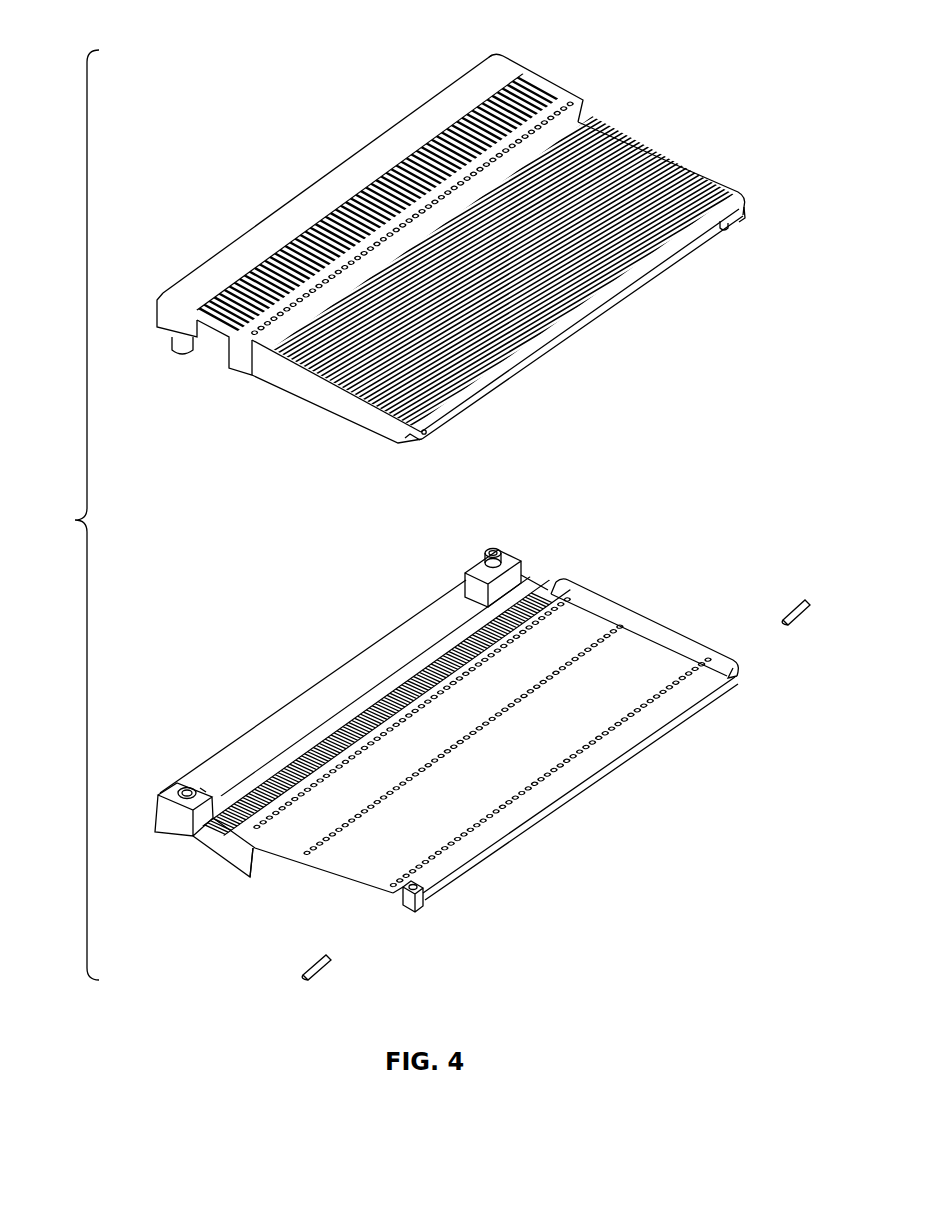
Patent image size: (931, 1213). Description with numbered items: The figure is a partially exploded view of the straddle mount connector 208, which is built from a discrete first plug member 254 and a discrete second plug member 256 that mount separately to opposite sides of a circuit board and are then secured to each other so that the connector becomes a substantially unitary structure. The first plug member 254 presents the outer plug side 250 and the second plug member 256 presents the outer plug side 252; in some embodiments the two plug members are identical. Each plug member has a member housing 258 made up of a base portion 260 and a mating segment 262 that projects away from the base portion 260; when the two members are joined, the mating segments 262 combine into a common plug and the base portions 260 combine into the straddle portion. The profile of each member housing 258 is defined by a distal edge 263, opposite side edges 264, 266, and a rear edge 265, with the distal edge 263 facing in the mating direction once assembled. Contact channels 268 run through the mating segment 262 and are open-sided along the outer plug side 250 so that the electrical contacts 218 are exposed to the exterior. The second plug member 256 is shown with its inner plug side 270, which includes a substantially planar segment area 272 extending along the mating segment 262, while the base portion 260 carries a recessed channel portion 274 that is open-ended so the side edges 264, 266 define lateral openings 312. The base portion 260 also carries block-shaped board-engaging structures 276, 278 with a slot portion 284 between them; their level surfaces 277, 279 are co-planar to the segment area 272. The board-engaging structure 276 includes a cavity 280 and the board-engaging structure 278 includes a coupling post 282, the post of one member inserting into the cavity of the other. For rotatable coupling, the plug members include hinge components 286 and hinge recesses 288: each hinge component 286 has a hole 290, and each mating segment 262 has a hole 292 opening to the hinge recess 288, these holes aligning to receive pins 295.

The straddle mount connector 208 is at (63, 515).
The electrical contacts 218 is at (672, 215).
The outer plug side 250 is at (600, 170).
The outer plug side 252 is at (535, 845).
The first plug member 254 is at (328, 78).
The second plug member 256 is at (240, 930).
The member housing 258 is at (433, 113).
The base portion 260 is at (537, 67).
The mating segment 262 is at (664, 152).
The distal edge 263 is at (600, 320).
The side edge 264 is at (743, 196).
The rear edge 265 is at (298, 205).
The side edge 266 is at (307, 410).
The contact channels 268 is at (647, 255).
The inner plug side 270 is at (540, 368).
The segment area 272 is at (526, 769).
The channel portion 274 is at (436, 648).
The board-engaging structure 276 is at (165, 790).
The level surface 277 is at (205, 790).
The board-engaging structure 278 is at (478, 568).
The level surface 279 is at (514, 566).
The cavity 280 is at (186, 790).
The coupling post 282 is at (497, 552).
The slot portion 284 is at (330, 690).
The hinge component 286 is at (734, 226).
The hinge recess 288 is at (405, 452).
The hole 290 is at (412, 901).
The hole 292 is at (424, 440).
The pins 295 is at (800, 618).
The lateral openings 312 is at (541, 584).